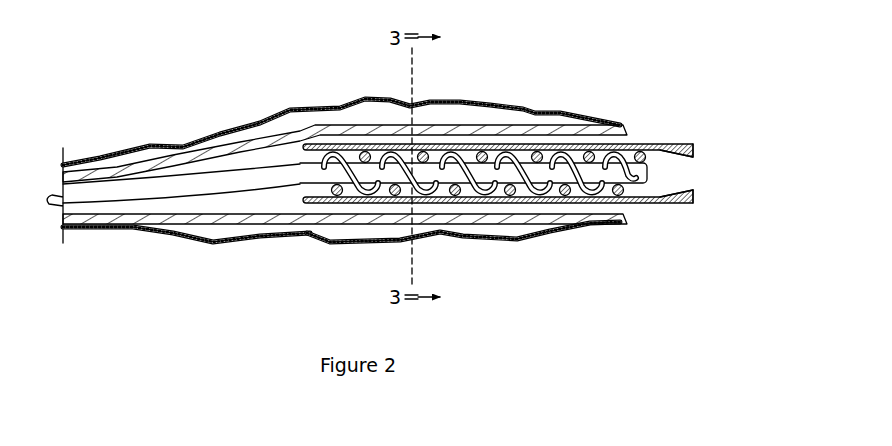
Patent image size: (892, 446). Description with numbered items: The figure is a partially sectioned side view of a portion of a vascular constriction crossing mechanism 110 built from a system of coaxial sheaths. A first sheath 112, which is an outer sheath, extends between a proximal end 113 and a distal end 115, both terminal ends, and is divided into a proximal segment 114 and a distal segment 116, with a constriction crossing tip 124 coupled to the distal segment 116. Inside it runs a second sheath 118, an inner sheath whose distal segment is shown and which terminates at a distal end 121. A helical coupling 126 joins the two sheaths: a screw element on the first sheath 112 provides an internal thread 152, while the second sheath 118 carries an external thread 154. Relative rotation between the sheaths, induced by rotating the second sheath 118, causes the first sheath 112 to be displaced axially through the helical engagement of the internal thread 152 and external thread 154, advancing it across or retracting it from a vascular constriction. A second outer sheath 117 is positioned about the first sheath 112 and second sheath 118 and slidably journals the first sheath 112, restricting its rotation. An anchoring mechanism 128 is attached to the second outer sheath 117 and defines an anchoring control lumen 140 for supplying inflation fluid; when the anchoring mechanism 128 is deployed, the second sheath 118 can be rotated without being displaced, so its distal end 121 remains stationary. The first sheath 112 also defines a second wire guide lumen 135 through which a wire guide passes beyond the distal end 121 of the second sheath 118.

The vascular constriction crossing mechanism 110 is at (98, 94).
The first sheath 112 is at (384, 133).
The proximal end 113 is at (288, 205).
The proximal segment 114 is at (355, 203).
The distal end 115 is at (690, 144).
The distal segment 116 is at (603, 208).
The second outer sheath 117 is at (522, 110).
The second sheath 118 is at (185, 192).
The distal end 121 is at (650, 170).
The constriction crossing tip 124 is at (688, 203).
The helical coupling 126 is at (346, 155).
The anchoring mechanism 128 is at (440, 236).
The second wire guide lumen 135 is at (663, 193).
The anchoring control lumen 140 is at (227, 135).
The internal thread 152 is at (462, 143).
The external thread 154 is at (538, 203).